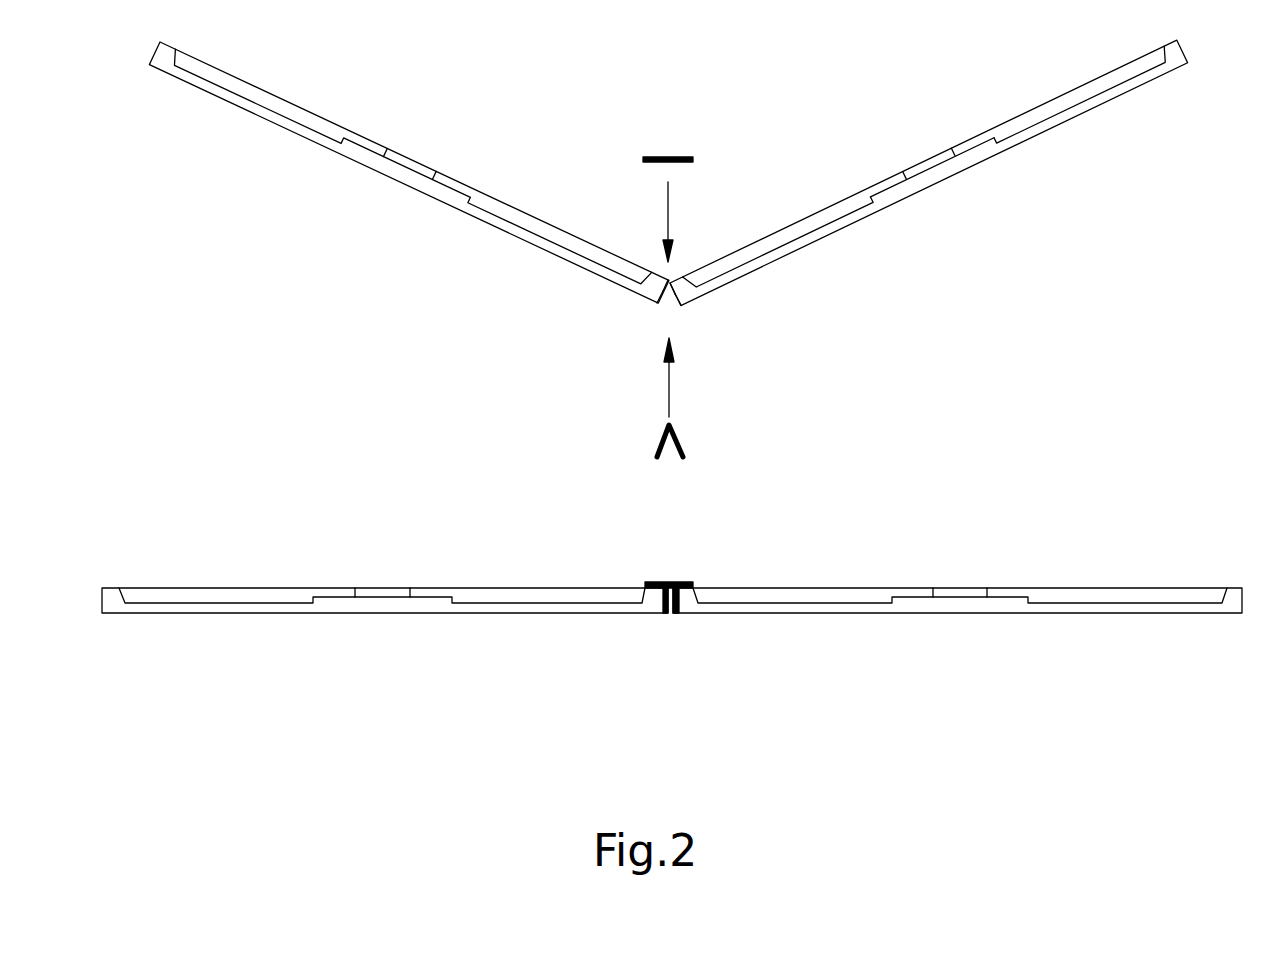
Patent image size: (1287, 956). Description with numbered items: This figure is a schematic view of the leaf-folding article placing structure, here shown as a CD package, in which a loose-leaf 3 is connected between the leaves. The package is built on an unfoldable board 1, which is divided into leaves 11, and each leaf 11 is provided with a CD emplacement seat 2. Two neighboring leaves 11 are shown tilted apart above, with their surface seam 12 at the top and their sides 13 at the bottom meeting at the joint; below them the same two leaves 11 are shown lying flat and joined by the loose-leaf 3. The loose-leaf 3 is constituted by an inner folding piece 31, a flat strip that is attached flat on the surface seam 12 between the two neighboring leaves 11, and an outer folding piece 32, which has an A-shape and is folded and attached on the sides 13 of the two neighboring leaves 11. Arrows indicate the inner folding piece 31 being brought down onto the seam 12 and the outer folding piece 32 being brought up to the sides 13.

The unfoldable board 1 is at (672, 511).
The leaf 11 is at (1035, 137).
The surface seam 12 is at (670, 282).
The side 13 is at (663, 297).
The CD emplacement seat 2 is at (913, 170).
The loose-leaf 3 is at (660, 582).
The inner folding piece 31 is at (668, 157).
The outer folding piece 32 is at (664, 440).